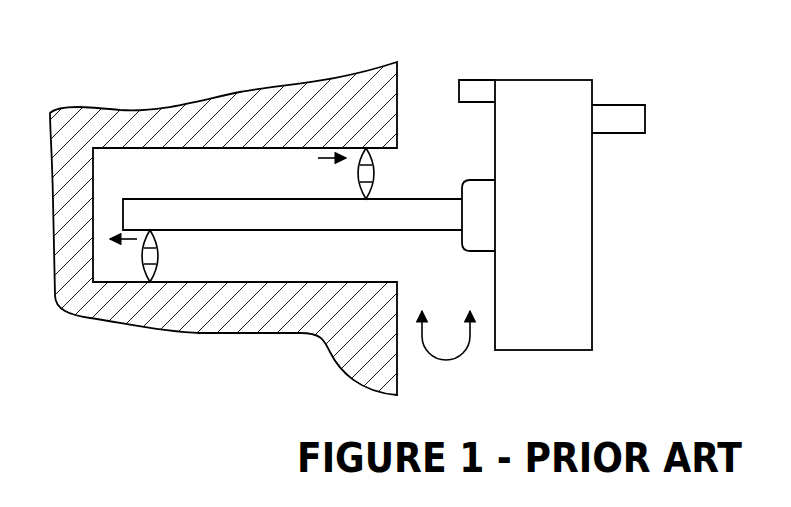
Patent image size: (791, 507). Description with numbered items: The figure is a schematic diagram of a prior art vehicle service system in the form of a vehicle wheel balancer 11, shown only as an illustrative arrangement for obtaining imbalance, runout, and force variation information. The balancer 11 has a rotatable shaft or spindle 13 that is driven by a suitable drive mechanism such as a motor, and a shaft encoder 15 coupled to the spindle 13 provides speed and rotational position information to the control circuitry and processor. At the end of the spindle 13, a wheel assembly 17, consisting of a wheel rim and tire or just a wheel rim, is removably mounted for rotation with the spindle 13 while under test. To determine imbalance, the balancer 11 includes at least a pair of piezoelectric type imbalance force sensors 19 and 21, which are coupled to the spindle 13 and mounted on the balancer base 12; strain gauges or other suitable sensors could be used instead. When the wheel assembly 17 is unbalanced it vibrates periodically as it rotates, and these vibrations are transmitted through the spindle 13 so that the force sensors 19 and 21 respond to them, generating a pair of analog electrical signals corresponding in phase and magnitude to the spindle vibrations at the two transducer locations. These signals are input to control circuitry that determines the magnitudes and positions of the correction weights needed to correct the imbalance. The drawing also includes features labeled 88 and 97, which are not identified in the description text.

The vehicle wheel balancer 11 is at (446, 360).
The balancer base 12 is at (323, 128).
The spindle 13 is at (427, 231).
The shaft encoder 15 is at (478, 180).
The wheel assembly 17 is at (592, 297).
The imbalance force sensor 19 is at (158, 260).
The imbalance force sensor 21 is at (375, 180).
The upper projection 88 is at (478, 80).
The side projection 97 is at (618, 105).